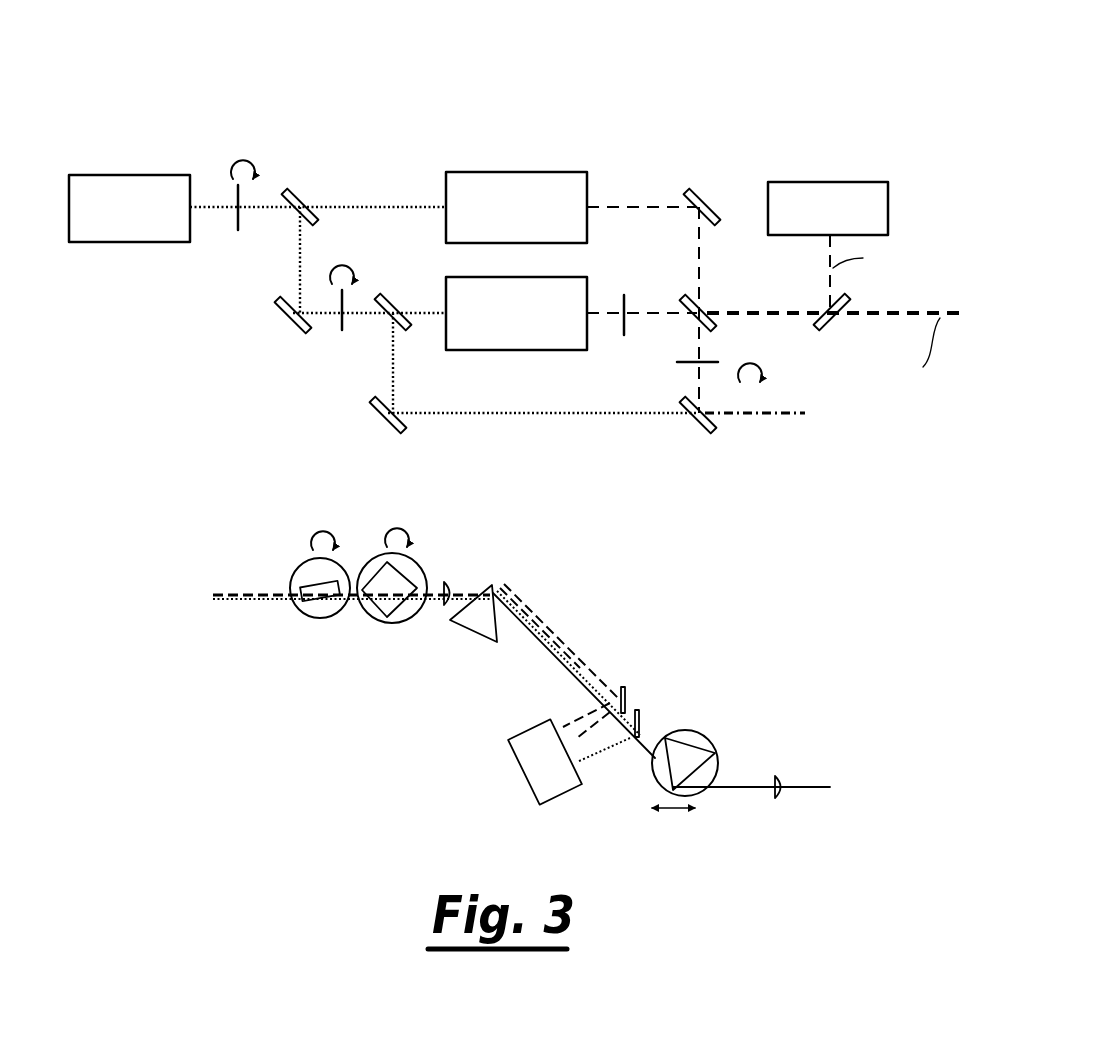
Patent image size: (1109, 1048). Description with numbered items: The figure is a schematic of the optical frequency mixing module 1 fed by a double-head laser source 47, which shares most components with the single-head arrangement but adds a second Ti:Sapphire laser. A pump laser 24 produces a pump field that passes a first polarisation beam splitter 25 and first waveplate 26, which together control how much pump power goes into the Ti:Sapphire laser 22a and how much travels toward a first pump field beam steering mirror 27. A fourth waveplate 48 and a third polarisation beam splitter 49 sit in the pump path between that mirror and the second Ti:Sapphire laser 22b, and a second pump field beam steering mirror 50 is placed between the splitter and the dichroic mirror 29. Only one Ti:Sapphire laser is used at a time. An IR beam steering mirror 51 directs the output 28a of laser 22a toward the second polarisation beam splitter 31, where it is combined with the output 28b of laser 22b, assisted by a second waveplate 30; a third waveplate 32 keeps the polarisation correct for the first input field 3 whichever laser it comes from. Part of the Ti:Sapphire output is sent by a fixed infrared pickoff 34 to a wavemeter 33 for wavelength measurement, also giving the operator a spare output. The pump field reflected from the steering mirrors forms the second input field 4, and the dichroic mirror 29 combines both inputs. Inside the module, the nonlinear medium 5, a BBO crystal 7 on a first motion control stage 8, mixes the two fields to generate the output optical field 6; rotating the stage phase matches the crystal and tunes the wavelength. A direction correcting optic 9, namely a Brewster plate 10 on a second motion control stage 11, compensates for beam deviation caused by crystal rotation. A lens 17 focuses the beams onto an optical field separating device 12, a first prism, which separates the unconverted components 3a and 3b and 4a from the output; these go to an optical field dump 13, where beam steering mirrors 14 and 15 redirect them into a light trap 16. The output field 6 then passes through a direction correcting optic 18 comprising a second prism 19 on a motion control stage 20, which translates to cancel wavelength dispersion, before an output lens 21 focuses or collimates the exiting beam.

The optical frequency mixing module 1 is at (688, 586).
The first input optical field 3 is at (703, 378).
The unwanted component of first input optical field 3a is at (593, 650).
The pump beam component 3b is at (558, 648).
The second input optical field 4 is at (620, 416).
The unwanted component of second input optical field 4a is at (563, 668).
The nonlinear medium 5 is at (210, 557).
The output optical field 6 is at (820, 790).
The BBO crystal 7 is at (313, 600).
The first motion control stage 8 is at (295, 605).
The direction correcting optic 9 is at (436, 523).
The Brewster plate 10 is at (412, 600).
The second motion control stage 11 is at (425, 570).
The optical field separating device 12 is at (496, 590).
The optical field dump 13 is at (655, 688).
The beam steering mirror 14 is at (622, 685).
The beam steering mirror 15 is at (641, 720).
The light trap 16 is at (520, 768).
The lens 17 is at (455, 588).
The direction correcting optic 18 is at (722, 715).
The second prism 19 is at (717, 748).
The motion control stage 20 is at (705, 790).
The output lens 21 is at (780, 794).
The Ti:Sapphire laser 22a is at (546, 172).
The Ti:Sapphire laser 22b is at (568, 276).
The pump laser 24 is at (129, 208).
The first polarisation beam splitter 25 is at (296, 192).
The first waveplate 26 is at (236, 194).
The first pump field beam steering mirror 27 is at (290, 318).
The output field from Ti:Sapphire laser 22a 28a is at (627, 207).
The output field from Ti:Sapphire laser 22b 28b is at (607, 318).
The dichroic mirror 29 is at (770, 439).
The second waveplate 30 is at (628, 305).
The second polarisation beam splitter 31 is at (698, 295).
The third waveplate 32 is at (687, 364).
The wavemeter 33 is at (828, 208).
The fixed infrared pickoff 34 is at (822, 325).
The double-head laser source 47 is at (663, 124).
The fourth waveplate 48 is at (340, 330).
The third polarisation beam splitter 49 is at (392, 295).
The second pump field beam steering mirror 50 is at (386, 420).
The IR beam steering mirror 51 is at (712, 202).